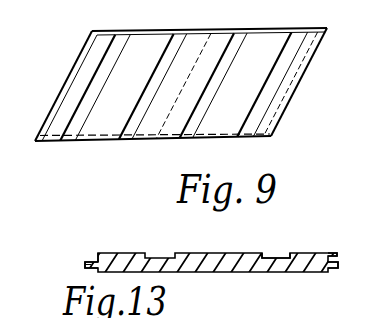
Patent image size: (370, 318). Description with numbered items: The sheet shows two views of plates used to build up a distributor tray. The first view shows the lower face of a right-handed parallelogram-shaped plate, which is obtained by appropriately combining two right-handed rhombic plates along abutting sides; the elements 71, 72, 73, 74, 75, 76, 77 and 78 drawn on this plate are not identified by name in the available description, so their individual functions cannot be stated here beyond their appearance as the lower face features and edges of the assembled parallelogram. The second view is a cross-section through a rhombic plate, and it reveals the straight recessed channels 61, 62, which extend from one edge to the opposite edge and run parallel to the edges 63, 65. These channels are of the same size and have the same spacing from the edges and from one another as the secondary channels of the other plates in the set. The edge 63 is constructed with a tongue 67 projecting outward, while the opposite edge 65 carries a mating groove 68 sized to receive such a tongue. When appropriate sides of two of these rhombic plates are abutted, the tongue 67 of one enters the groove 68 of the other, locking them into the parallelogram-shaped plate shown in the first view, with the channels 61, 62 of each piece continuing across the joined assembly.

In FIG. 9, the panel portion 71 is at (147, 90).
In FIG. 9, the rib 72 is at (108, 77).
In FIG. 9, the left edge flange 73 is at (70, 72).
In FIG. 9, the bottom edge groove line 74 is at (166, 140).
In FIG. 9, the right edge flange 75 is at (291, 102).
In FIG. 9, the top edge lip 76 is at (188, 29).
In FIG. 9, the corner of panel 77 is at (105, 28).
In FIG. 9, the edge groove 78 is at (278, 120).
In FIG. 13, the straight recessed channel 61 is at (160, 256).
In FIG. 13, the straight recessed channel 62 is at (272, 252).
In FIG. 13, the edge 63 is at (98, 256).
In FIG. 13, the edge 65 is at (343, 235).
In FIG. 13, the tongue 67 is at (85, 264).
In FIG. 13, the mating groove 68 is at (333, 269).